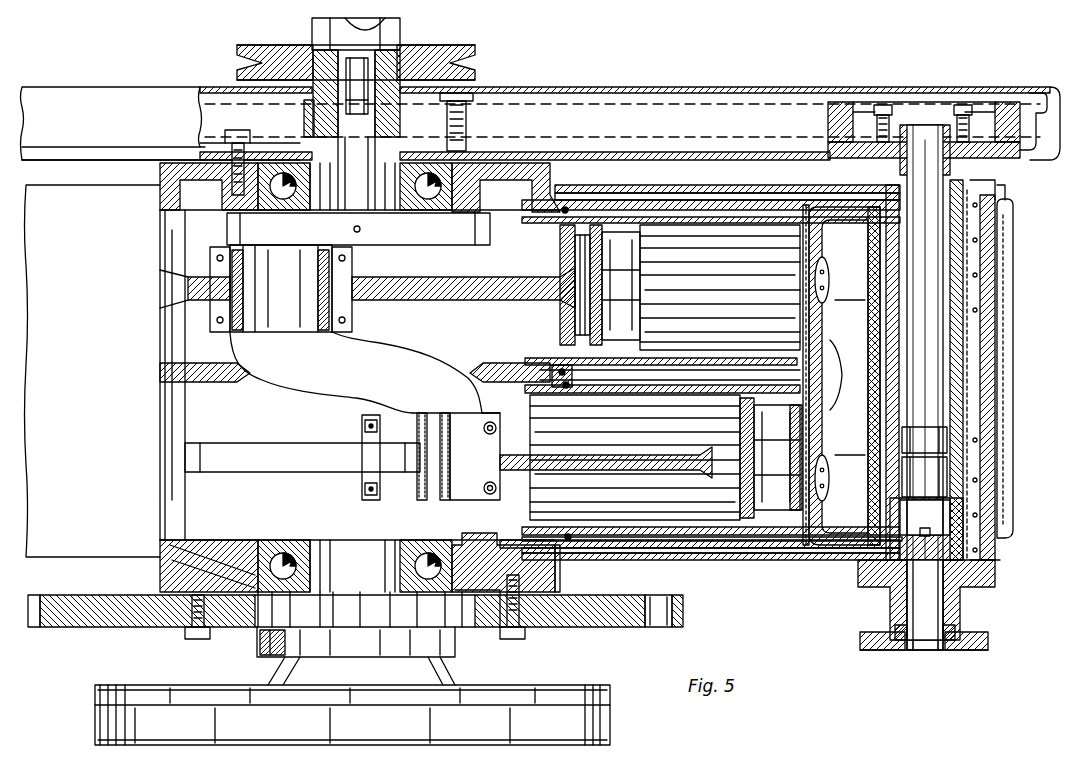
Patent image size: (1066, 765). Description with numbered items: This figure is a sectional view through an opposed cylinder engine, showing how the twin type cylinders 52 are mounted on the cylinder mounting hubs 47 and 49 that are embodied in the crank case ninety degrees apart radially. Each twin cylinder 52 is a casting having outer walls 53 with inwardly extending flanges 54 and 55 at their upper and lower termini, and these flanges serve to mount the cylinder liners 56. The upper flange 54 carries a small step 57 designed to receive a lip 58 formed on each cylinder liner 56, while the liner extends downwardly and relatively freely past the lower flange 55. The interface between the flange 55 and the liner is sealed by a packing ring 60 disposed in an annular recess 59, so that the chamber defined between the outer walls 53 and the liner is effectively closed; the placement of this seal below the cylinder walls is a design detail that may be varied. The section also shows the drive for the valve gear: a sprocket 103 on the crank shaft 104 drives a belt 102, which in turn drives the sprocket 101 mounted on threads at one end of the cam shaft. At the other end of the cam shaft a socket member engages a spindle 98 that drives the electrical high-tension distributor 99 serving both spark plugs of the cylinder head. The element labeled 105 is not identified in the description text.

The cylinder mounting hub 47 is at (550, 573).
The cylinder mounting hub 49 is at (163, 576).
The twin type cylinder 52 is at (64, 542).
The outer wall 53 is at (703, 557).
The inwardly extending flange 54 is at (783, 548).
The inwardly extending flange 55 is at (575, 544).
The cylinder liner 56 is at (642, 526).
The small step 57 is at (778, 372).
The lip 58 is at (797, 372).
The annular recess 59 is at (588, 207).
The packing ring 60 is at (568, 207).
The spindle 98 is at (920, 648).
The electrical high-tension distributor 99 is at (875, 634).
The sprocket 101 is at (1010, 150).
The belt 102 is at (776, 100).
The sprocket 103 is at (310, 119).
The crank shaft 104 is at (383, 205).
The bolt 105 is at (500, 97).